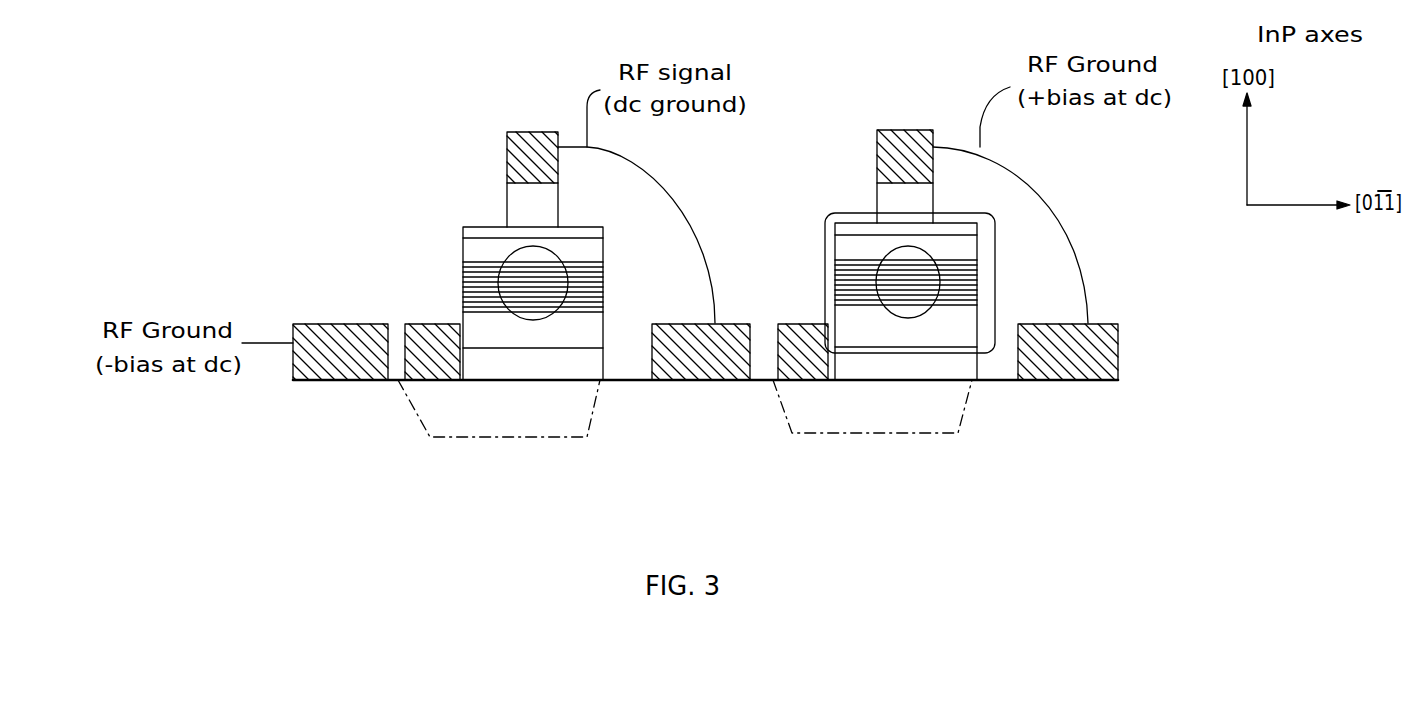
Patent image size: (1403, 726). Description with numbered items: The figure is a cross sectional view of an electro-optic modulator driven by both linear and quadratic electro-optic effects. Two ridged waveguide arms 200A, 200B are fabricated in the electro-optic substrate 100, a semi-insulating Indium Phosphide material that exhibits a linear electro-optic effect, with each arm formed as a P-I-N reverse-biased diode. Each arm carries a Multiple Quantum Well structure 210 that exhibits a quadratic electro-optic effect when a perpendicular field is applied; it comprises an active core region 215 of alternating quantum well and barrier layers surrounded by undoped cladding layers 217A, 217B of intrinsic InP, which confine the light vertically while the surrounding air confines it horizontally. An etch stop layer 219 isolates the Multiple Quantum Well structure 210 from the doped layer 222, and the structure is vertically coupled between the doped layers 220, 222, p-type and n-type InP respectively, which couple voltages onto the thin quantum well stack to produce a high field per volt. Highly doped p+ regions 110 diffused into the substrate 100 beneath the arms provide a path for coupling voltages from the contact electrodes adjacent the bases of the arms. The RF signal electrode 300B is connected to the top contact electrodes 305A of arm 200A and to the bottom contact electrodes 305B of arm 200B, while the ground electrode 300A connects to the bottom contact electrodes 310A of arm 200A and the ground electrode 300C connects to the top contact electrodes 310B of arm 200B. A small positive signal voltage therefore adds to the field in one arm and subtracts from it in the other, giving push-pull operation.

The electro-optic substrate 100 is at (760, 380).
The highly doped regions 110 is at (495, 425).
The waveguide arm 200A is at (530, 98).
The waveguide arm 200B is at (905, 102).
The Multiple Quantum Well structure 210 is at (995, 287).
The active core region 215 is at (463, 273).
The undoped cladding layer 217A is at (463, 247).
The undoped cladding layer 217B is at (463, 312).
The etch stop layer 219 is at (463, 227).
The doped layer 220 is at (590, 368).
The doped layer 222 is at (507, 185).
The RF bias electrode 300A is at (338, 380).
The RF signal electrode 300B is at (700, 380).
The RF bias electrode 300C is at (1063, 380).
The top contact electrode 305A is at (507, 132).
The bottom contact electrode 305B is at (810, 323).
The bottom contact electrode 310A is at (428, 380).
The top contact electrode 310B is at (877, 143).